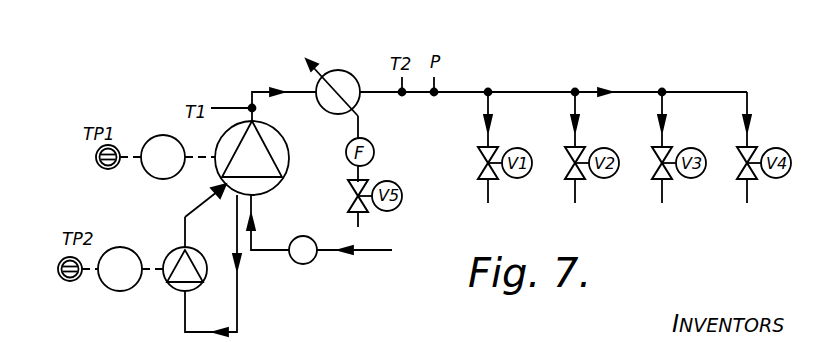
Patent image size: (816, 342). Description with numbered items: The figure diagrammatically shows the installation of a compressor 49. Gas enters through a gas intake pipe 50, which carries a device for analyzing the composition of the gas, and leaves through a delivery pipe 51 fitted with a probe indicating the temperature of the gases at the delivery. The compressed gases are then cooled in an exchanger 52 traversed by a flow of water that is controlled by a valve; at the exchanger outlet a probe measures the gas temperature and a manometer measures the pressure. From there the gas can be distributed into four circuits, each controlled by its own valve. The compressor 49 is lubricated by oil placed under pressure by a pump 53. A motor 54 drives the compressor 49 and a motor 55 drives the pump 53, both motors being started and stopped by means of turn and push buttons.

The compressor 49 is at (270, 191).
The gas intake pipe 50 is at (278, 253).
The delivery pipe 51 is at (292, 87).
The exchanger 52 is at (350, 70).
The pump 53 is at (203, 281).
The motor 54 is at (160, 135).
The motor 55 is at (123, 291).